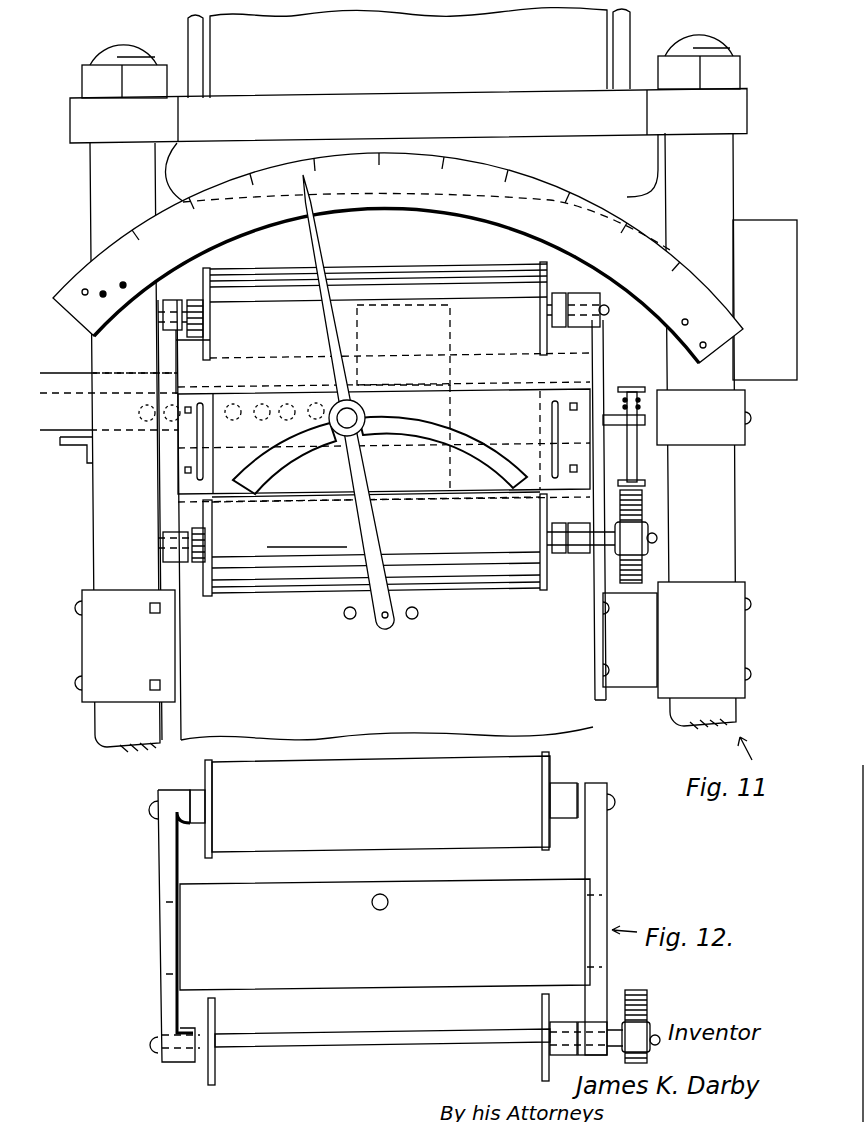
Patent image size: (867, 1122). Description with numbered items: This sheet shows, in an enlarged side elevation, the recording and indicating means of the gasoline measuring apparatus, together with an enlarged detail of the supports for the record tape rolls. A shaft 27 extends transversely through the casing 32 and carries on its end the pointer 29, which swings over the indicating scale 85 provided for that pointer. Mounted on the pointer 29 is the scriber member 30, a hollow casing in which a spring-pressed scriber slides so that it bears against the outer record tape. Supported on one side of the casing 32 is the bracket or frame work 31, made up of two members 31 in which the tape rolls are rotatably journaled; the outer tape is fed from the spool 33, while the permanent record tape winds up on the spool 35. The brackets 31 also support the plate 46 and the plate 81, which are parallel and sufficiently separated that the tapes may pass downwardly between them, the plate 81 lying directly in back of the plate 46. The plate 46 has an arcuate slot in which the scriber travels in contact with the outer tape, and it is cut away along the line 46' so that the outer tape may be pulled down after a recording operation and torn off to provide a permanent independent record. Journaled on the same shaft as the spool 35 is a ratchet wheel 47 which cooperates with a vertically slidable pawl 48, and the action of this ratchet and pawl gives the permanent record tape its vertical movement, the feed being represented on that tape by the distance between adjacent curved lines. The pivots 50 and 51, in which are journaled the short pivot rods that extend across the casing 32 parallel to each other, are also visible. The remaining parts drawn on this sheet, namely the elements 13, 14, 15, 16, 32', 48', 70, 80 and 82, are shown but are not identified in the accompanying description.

In FIG. 11, the bed block 13 is at (607, 55).
In FIG. 11, the guide strip 14 is at (622, 48).
In FIG. 11, the cross beam 15 is at (728, 108).
In FIG. 11, the standard column 16 is at (107, 728).
In FIG. 11, the shaft 27 is at (385, 622).
In FIG. 11, the pointer 29 is at (372, 528).
In FIG. 11, the scriber member 30 is at (357, 403).
In FIG. 12, the bracket or frame work 31 is at (163, 887).
In FIG. 11, the casing 32 is at (407, 520).
In FIG. 11, the clamp block 32' is at (413, 642).
In FIG. 11, the tape roll 33 is at (547, 280).
In FIG. 12, the tape roll 33 is at (370, 805).
In FIG. 11, the tape roll 35 is at (352, 544).
In FIG. 12, the tape roll 35 is at (415, 1039).
In FIG. 11, the plate 46 is at (284, 458).
In FIG. 11, the cut-away line 46' is at (443, 453).
In FIG. 11, the ratchet wheel 47 is at (615, 508).
In FIG. 12, the ratchet wheel 47 is at (650, 998).
In FIG. 11, the pawl 48 is at (654, 436).
In FIG. 11, the block 48' is at (699, 417).
In FIG. 11, the pivot 50 is at (417, 618).
In FIG. 11, the pivot 51 is at (346, 619).
In FIG. 11, the bracket 70 is at (765, 300).
In FIG. 12, the hole 80 is at (392, 906).
In FIG. 12, the plate 81 is at (507, 878).
In FIG. 12, the lug 82 is at (613, 808).
In FIG. 11, the indicating scale 85 is at (252, 218).